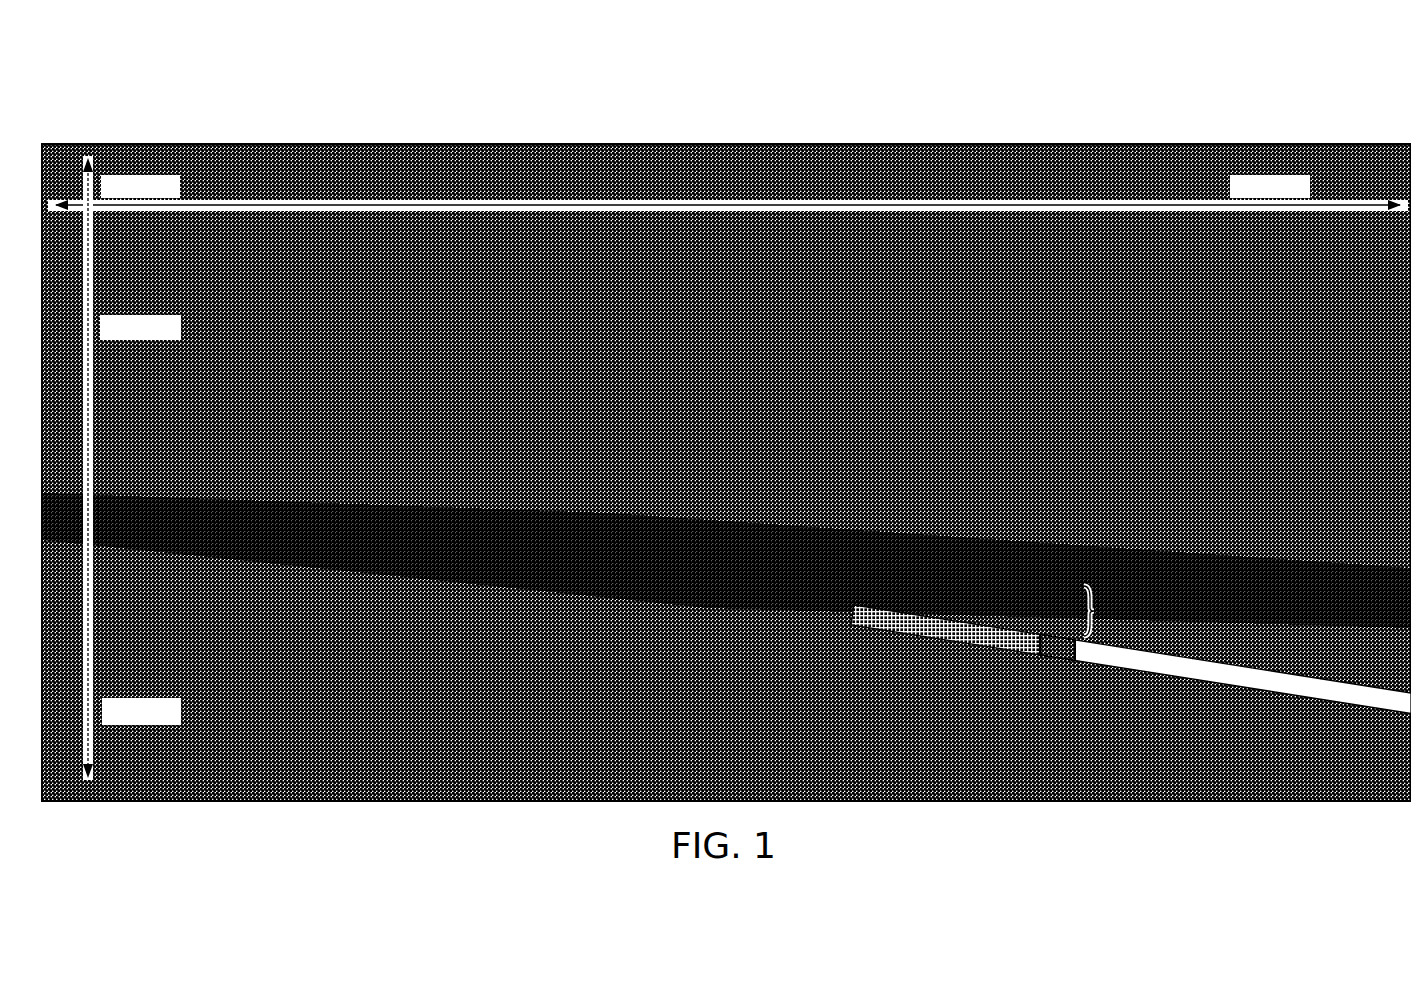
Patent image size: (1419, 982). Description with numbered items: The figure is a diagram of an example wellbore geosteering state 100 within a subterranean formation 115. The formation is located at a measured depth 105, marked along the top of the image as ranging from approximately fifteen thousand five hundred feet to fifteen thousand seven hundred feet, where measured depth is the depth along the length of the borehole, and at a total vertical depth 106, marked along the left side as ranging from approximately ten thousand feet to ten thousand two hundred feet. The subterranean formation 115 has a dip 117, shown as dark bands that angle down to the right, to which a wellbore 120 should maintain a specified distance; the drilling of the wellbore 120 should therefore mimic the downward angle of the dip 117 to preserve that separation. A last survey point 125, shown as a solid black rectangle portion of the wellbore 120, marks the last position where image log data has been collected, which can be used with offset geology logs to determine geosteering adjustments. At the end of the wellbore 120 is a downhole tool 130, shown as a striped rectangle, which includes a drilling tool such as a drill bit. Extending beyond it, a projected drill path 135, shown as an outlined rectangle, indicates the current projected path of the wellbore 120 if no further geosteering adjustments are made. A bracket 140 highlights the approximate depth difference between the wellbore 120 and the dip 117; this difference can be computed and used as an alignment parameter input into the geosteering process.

The wellbore geosteering state 100 is at (176, 81).
The measured depth 105 is at (265, 197).
The total vertical depth 106 is at (84, 570).
The subterranean formation 115 is at (663, 116).
The dip 117 is at (596, 533).
The wellbore 120 is at (503, 581).
The last survey point 125 is at (835, 575).
The downhole tool 130 is at (1049, 660).
The projected drill path 135 is at (1236, 692).
The bracket 140 is at (1086, 603).